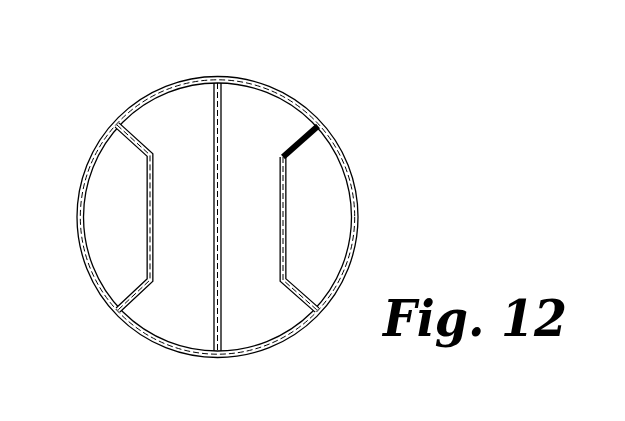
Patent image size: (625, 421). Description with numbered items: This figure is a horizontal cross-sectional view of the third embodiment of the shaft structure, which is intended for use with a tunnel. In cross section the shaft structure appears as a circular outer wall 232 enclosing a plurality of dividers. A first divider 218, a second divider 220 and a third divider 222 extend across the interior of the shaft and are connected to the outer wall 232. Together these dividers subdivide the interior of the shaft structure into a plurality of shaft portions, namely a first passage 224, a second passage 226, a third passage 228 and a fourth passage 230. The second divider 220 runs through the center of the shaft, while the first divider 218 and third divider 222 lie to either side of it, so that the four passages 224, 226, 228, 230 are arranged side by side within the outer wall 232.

The first divider 218 is at (137, 300).
The second divider 220 is at (218, 330).
The third divider 222 is at (304, 146).
The first passage 224 is at (125, 192).
The second passage 226 is at (180, 120).
The third passage 228 is at (250, 125).
The fourth passage 230 is at (318, 218).
The outer wall 232 is at (294, 102).